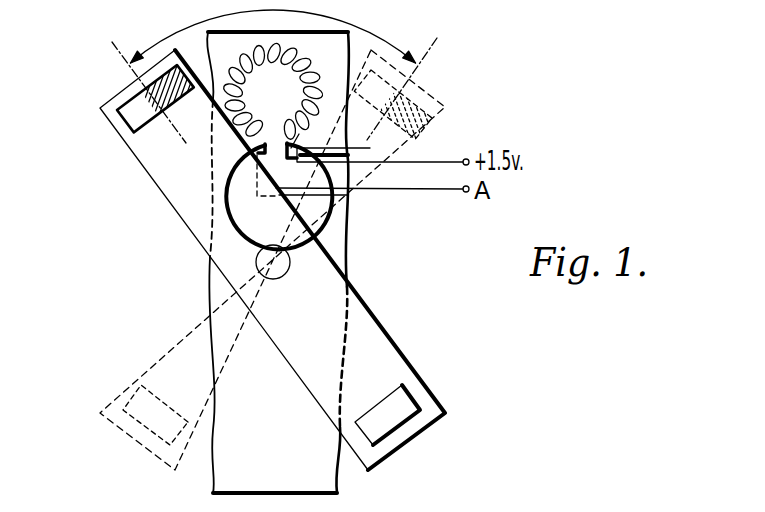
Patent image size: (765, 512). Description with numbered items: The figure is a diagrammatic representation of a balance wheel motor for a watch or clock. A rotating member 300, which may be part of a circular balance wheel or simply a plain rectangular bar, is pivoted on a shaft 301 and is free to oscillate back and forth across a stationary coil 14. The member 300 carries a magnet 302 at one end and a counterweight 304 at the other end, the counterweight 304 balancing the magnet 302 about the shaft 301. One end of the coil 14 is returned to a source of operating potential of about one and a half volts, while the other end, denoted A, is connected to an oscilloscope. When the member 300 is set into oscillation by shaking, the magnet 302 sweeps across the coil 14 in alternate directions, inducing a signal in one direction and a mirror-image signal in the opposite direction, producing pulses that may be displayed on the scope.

The stationary coil 14 is at (308, 65).
The rotating member 300 is at (113, 97).
The shaft 301 is at (256, 259).
The magnet 302 is at (118, 117).
The counterweight 304 is at (405, 398).